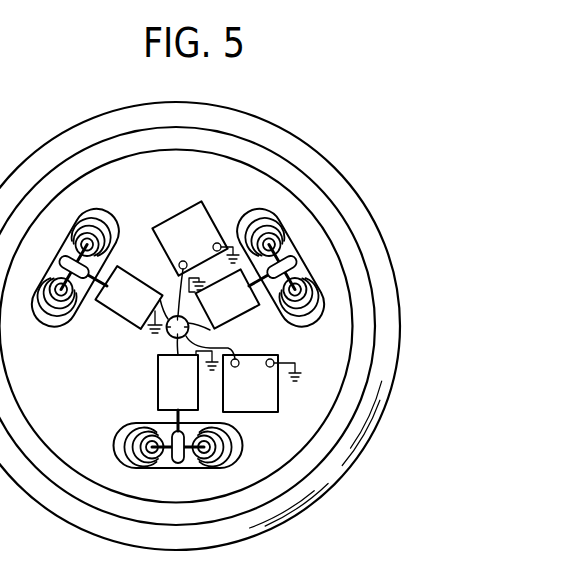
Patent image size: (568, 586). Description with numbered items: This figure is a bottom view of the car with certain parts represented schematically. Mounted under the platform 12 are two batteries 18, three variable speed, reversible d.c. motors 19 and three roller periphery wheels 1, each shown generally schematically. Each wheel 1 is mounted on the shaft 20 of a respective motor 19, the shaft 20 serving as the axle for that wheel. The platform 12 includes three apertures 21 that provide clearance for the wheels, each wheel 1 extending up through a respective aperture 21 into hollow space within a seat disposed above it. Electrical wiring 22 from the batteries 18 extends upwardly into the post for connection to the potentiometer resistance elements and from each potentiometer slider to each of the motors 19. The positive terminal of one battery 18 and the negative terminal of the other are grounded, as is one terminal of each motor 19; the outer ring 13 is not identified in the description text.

The roller periphery wheel 1 is at (186, 455).
The platform 12 is at (229, 122).
The outer housing wall 13 is at (283, 129).
The battery 18 is at (175, 215).
The variable speed, reversible d.c. motor 19 is at (122, 318).
The shaft 20 is at (168, 415).
The aperture 21 is at (258, 212).
The electrical wiring 22 is at (213, 343).